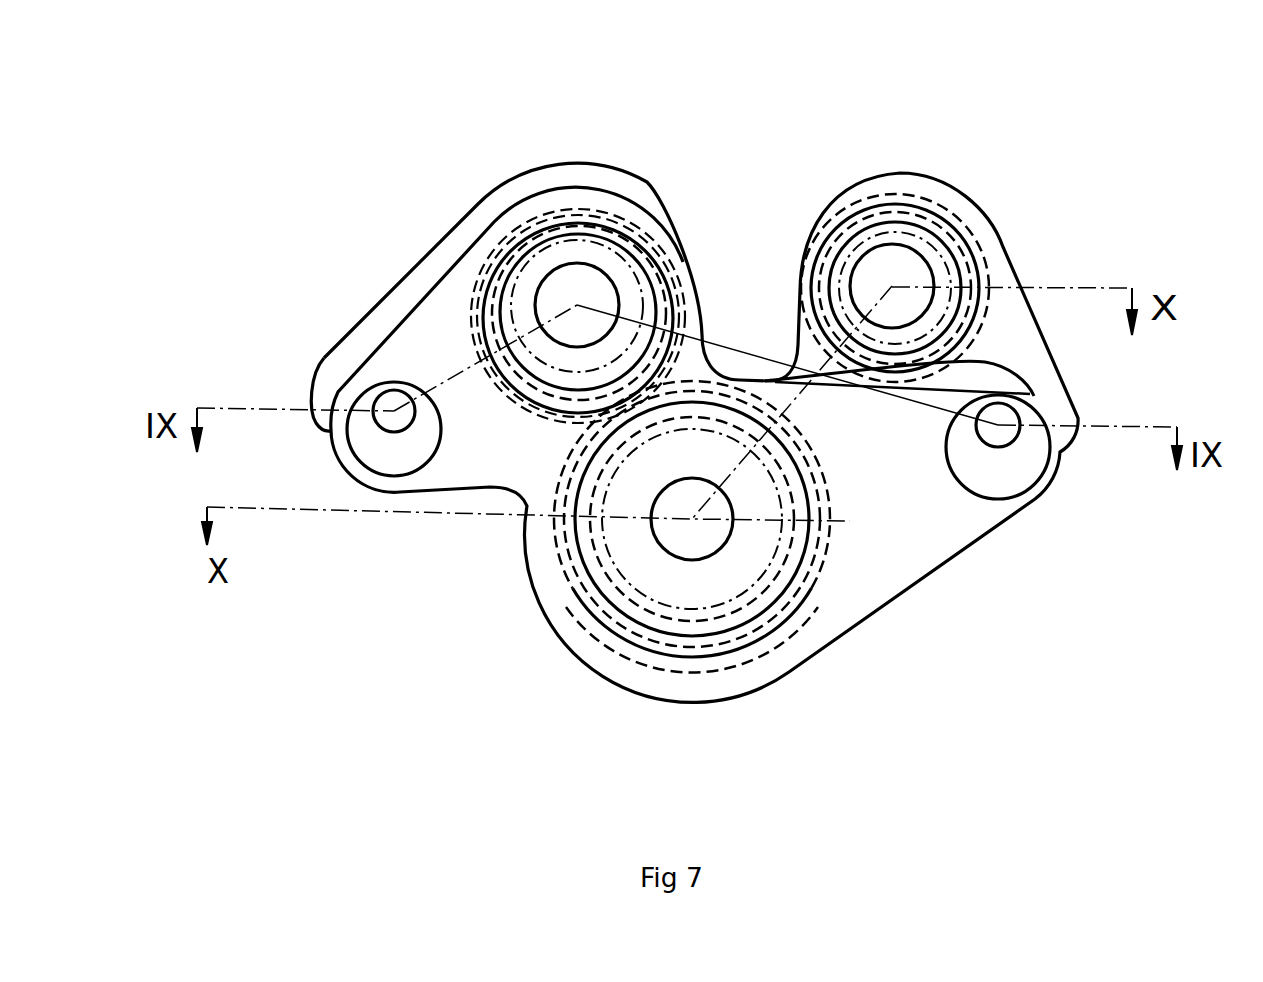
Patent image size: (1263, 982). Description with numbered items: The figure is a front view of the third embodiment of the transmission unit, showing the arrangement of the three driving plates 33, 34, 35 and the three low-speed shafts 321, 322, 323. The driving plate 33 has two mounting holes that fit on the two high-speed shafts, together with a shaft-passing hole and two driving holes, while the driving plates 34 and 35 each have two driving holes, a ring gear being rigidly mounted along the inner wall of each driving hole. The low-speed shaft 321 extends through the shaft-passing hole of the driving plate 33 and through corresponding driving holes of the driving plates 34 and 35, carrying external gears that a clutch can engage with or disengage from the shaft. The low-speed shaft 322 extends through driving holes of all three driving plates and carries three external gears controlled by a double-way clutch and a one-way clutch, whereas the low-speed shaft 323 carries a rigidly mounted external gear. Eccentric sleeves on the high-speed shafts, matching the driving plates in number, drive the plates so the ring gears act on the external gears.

The driving plate 33 is at (1010, 277).
The driving plate 34 is at (400, 290).
The driving plate 35 is at (868, 590).
The low-speed shaft 321 is at (563, 278).
The low-speed shaft 322 is at (670, 538).
The low-speed shaft 323 is at (902, 270).